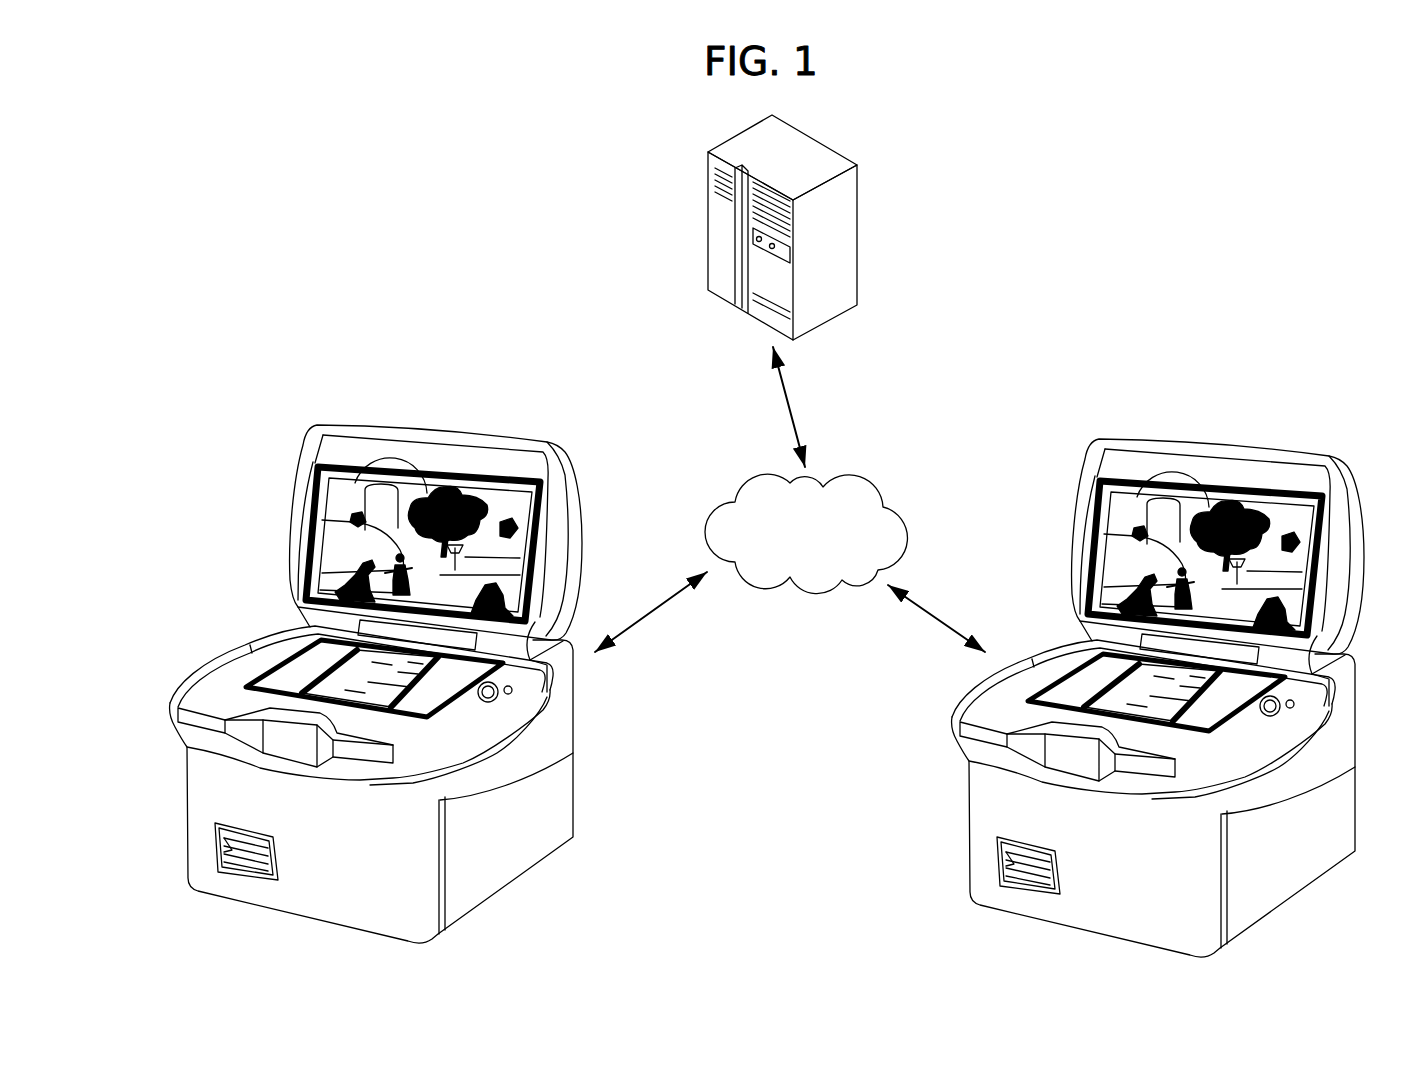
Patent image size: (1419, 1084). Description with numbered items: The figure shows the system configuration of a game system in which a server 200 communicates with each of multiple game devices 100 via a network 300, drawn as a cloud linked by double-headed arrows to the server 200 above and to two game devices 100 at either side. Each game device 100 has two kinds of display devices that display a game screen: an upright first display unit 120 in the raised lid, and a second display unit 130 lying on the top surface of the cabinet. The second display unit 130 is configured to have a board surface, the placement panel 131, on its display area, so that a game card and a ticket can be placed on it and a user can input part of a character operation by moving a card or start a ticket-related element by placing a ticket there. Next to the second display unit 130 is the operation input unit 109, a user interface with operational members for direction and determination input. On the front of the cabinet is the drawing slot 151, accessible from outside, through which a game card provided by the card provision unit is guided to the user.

The game device 100 is at (398, 424).
The operation input unit 109 is at (513, 688).
The first display unit 120 is at (313, 590).
The second display unit 130 is at (450, 702).
The placement panel 131 is at (245, 688).
The drawing slot 151 is at (223, 853).
The server 200 is at (857, 210).
The network 300 is at (806, 533).